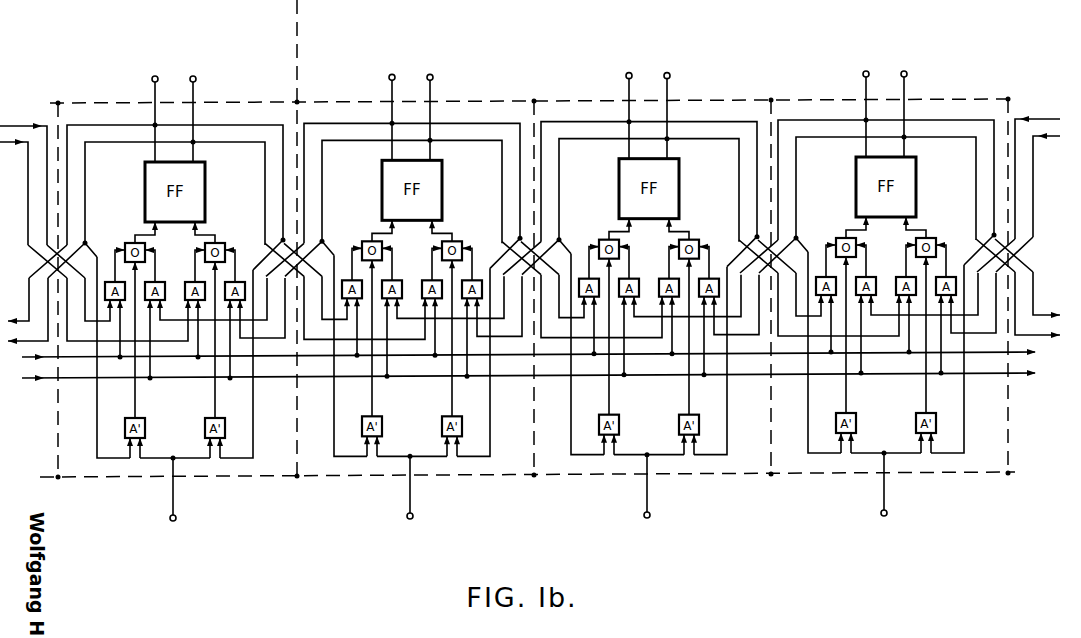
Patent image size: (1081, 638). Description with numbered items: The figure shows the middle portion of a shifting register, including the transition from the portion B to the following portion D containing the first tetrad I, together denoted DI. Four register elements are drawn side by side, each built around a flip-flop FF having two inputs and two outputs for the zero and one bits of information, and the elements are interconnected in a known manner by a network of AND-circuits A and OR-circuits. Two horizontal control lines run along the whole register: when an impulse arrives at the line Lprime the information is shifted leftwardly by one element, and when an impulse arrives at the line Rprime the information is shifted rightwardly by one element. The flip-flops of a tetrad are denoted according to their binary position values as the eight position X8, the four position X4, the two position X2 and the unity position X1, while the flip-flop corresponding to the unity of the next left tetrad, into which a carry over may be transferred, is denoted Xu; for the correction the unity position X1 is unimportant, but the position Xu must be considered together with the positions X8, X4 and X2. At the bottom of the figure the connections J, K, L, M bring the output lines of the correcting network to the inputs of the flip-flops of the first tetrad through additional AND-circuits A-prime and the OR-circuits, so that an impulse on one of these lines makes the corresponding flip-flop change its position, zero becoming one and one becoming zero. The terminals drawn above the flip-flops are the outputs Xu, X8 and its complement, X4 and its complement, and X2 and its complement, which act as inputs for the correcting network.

The portion B is at (295, 54).
The portion D, first tetrad I DI is at (1080, 54).
The flip-flop position x_u / output X_u Xu is at (117, 179).
The flip-flop position x_8 / output X_8 X8 is at (354, 177).
The flip-flop position x_4 / output X_4 X4 is at (591, 176).
The flip-flop position x_2 / output X_2 X2 is at (828, 174).
The flip-flop position x_1 X1 is at (1062, 173).
The line R' Rprime is at (528, 354).
The line L' Lprime is at (527, 375).
The connection J is at (177, 492).
The connection K is at (418, 490).
The connection L is at (654, 489).
The connection M is at (893, 487).